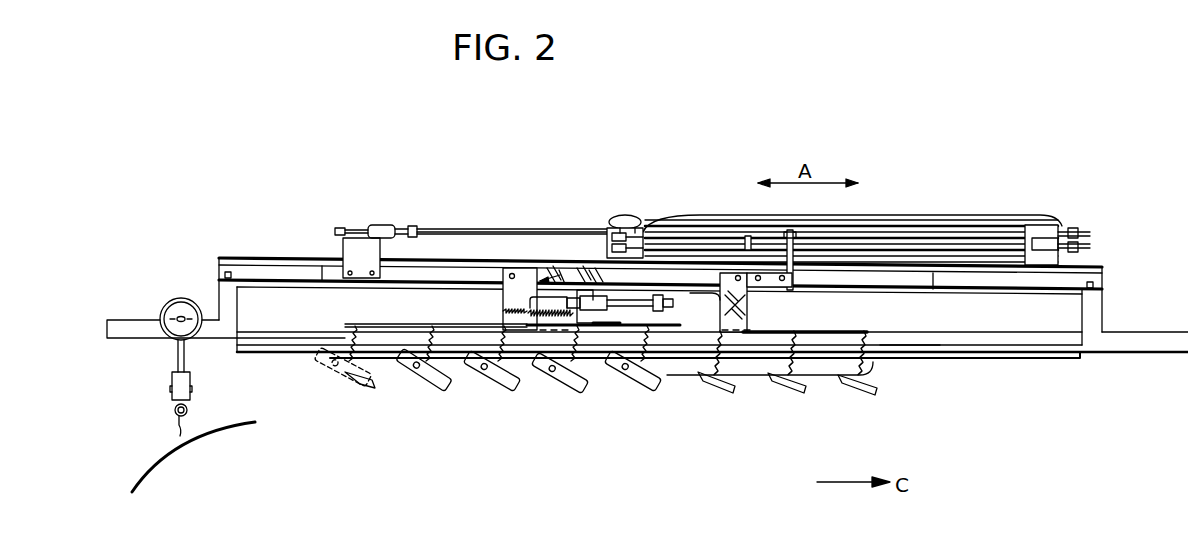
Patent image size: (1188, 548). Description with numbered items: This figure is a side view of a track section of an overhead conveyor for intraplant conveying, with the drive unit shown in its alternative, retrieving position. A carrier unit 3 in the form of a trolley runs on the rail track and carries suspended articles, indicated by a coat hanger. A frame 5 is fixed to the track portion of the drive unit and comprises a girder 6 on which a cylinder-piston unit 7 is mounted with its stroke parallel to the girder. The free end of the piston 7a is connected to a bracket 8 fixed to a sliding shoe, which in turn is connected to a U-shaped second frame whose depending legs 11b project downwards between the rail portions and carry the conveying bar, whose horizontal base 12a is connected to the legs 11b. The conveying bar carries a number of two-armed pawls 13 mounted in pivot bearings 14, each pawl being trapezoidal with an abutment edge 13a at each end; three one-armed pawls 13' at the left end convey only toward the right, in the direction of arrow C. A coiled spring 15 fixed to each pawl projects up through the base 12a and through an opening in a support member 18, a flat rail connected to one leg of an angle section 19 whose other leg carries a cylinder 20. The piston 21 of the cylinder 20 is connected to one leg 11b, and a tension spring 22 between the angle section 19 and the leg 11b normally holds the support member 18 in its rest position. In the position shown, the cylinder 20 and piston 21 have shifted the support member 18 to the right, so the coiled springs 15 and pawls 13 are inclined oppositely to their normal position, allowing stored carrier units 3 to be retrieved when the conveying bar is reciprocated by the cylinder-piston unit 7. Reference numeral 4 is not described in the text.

The carrier unit 3 is at (172, 384).
The arc guide 4 is at (192, 440).
The frame 5 is at (216, 286).
The girder 6 is at (297, 277).
The cylinder-piston unit 7 is at (648, 221).
The piston 7a is at (454, 232).
The bracket 8 is at (362, 255).
The depending legs 11b is at (737, 302).
The horizontal base 12a is at (927, 360).
The two-armed pawl 13 is at (857, 414).
The one-armed pawl 13' is at (417, 400).
The abutment edge 13a is at (802, 382).
The pivot bearing 14 is at (637, 372).
The coiled spring 15 is at (865, 347).
The support member 18 is at (828, 330).
The angle section 19 is at (583, 312).
The cylinder 20 is at (648, 306).
The piston 21 is at (569, 313).
The tension spring 22 is at (548, 314).